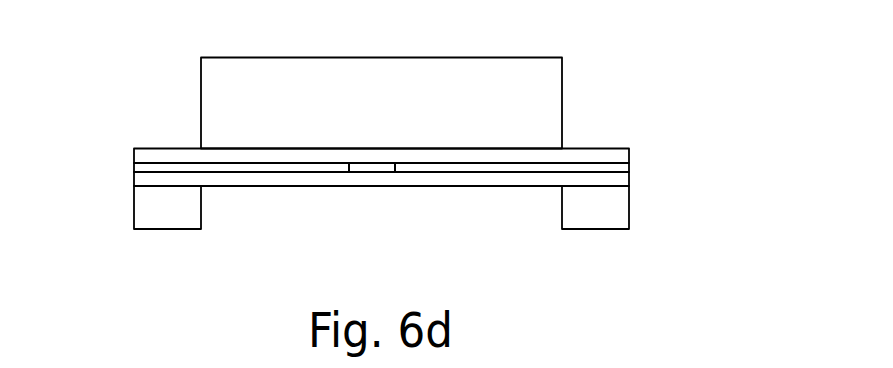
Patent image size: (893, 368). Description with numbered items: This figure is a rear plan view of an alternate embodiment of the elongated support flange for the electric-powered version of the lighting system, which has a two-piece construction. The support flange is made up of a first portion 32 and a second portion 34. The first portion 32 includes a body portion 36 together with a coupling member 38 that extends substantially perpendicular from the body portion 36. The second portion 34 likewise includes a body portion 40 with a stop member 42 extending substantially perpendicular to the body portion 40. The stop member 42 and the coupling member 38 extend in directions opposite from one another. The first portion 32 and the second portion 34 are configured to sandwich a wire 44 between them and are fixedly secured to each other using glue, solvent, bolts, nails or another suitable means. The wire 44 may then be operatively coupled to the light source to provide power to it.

The first portion 32 is at (168, 153).
The second portion 34 is at (250, 187).
The body portion 36 is at (599, 157).
The coupling member 38 is at (523, 95).
The body portion 40 is at (462, 179).
The stop member 42 is at (603, 203).
The wire 44 is at (373, 168).